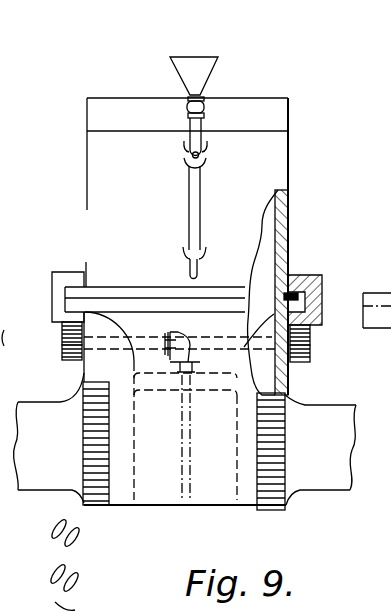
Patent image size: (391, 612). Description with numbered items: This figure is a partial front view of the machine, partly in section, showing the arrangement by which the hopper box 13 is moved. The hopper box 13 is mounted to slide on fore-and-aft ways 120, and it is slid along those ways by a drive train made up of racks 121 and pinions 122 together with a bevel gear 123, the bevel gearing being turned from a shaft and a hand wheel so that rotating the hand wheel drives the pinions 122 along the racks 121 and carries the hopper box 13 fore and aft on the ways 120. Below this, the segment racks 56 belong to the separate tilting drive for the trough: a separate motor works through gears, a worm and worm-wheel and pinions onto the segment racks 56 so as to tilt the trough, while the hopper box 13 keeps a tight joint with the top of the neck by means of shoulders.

The hopper box 13 is at (87, 136).
The fore-and-aft ways 120 is at (320, 287).
The racks 121 is at (62, 328).
The pinions 122 is at (62, 353).
The bevel gear 123 is at (187, 350).
The segment racks 56 is at (99, 506).